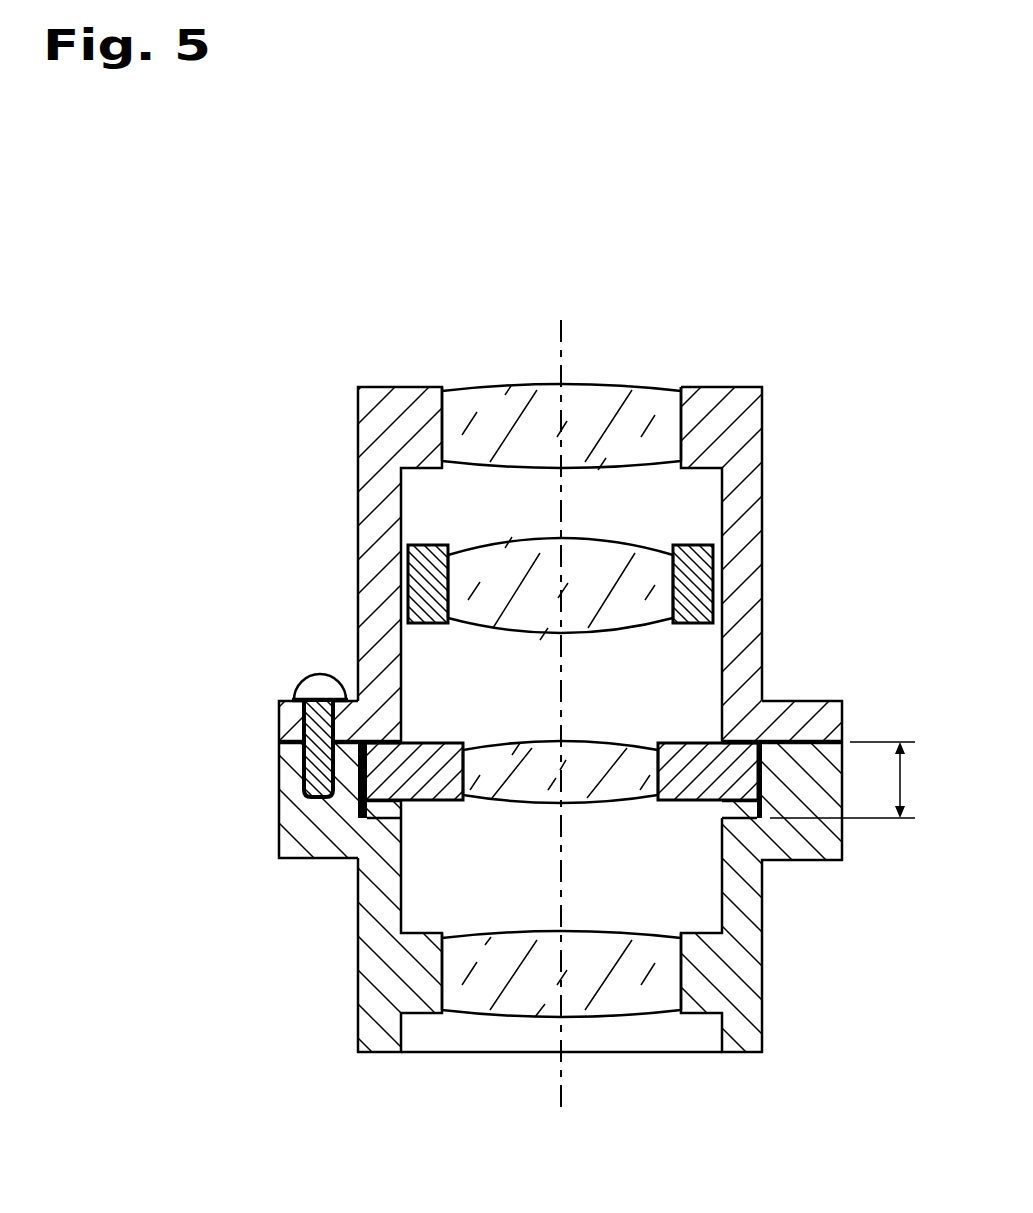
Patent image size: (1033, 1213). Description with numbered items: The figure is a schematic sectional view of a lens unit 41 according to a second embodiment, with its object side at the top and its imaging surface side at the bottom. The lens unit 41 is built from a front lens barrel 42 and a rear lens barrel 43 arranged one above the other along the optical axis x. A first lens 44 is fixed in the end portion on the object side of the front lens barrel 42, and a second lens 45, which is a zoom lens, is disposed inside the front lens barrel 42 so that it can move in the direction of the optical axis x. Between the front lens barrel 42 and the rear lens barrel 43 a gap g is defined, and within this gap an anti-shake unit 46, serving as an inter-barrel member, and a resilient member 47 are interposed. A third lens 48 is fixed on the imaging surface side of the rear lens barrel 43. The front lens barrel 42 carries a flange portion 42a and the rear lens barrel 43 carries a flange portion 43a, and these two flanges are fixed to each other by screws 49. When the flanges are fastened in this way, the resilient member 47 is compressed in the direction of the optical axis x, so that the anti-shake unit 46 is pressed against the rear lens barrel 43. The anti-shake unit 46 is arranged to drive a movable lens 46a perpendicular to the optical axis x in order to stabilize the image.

The lens unit 41 is at (418, 312).
The front lens barrel 42 is at (360, 520).
The flange portion 42a is at (277, 720).
The rear lens barrel 43 is at (358, 953).
The flange portion 43a is at (278, 785).
The first lens 44 is at (637, 393).
The second lens 45 is at (638, 548).
The anti-shake unit 46 is at (492, 732).
The movable lens 46a is at (610, 755).
The resilient member 47 is at (372, 810).
The third lens 48 is at (617, 1000).
The screws 49 is at (318, 674).
The gap g is at (855, 780).
The optical axis x is at (565, 693).